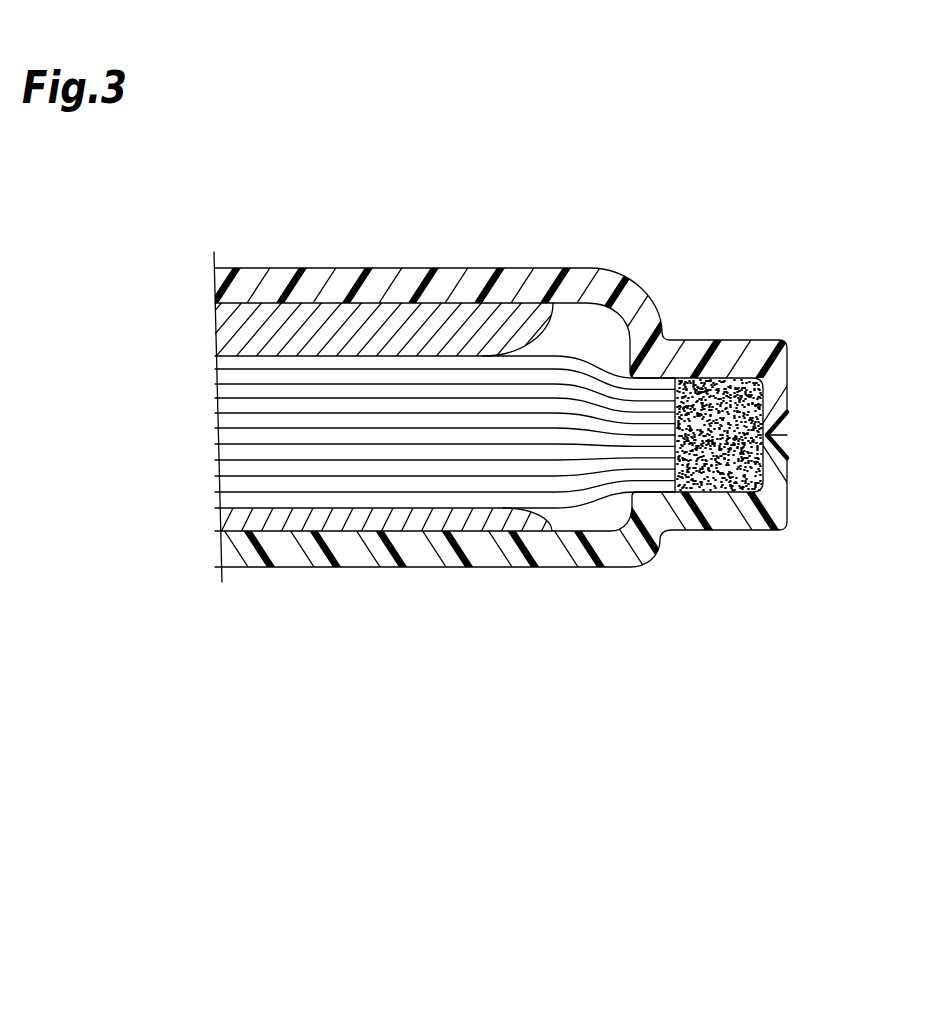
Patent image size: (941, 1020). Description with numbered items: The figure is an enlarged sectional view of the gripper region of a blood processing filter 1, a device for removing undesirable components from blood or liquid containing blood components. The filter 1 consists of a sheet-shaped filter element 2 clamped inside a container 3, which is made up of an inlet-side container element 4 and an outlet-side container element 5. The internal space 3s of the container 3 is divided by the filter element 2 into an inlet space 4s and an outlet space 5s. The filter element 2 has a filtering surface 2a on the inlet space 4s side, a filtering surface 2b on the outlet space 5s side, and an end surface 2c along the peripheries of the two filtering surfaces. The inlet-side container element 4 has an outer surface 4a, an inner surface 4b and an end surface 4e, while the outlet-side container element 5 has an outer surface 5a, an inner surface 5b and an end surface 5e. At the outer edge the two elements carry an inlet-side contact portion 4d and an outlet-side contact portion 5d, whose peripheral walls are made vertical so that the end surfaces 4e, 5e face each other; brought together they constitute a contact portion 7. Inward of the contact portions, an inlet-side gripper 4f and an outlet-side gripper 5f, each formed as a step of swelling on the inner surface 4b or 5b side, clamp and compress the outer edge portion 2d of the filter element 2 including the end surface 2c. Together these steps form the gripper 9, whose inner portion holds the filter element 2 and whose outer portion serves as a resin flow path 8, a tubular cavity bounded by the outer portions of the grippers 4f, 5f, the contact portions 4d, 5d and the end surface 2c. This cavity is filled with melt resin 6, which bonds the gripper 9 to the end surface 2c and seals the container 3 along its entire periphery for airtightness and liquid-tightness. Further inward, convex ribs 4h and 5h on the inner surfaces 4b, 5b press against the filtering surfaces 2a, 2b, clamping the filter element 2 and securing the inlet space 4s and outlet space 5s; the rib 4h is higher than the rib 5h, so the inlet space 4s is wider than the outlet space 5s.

The blood processing filter 1 is at (467, 382).
The filter element 2 is at (376, 432).
The container 3 is at (467, 427).
The inlet-side container element 4 is at (223, 285).
The outlet-side container element 5 is at (313, 548).
The melt resin 6 is at (744, 386).
The resin flow path 8 is at (733, 387).
The contact portion 7 is at (887, 345).
The gripper 9 is at (798, 586).
The filtering surface 2a is at (523, 357).
The filtering surface 2b is at (528, 510).
The end surface 2c is at (678, 403).
The outer edge portion 2d is at (627, 500).
The internal space 3s is at (637, 203).
The inlet space 4s is at (567, 330).
The outlet space 5s is at (583, 520).
The outer surface 4a is at (285, 268).
The inner surface 4b is at (323, 306).
The inlet-side contact portion 4d is at (777, 402).
The end surface 4e is at (783, 442).
The inlet-side gripper 4f is at (712, 380).
The rib 4h is at (253, 330).
The outer surface 5a is at (303, 567).
The inner surface 5b is at (360, 525).
The outlet-side contact portion 5d is at (777, 468).
The end surface 5e is at (770, 433).
The outlet-side gripper 5f is at (708, 487).
The rib 5h is at (257, 519).